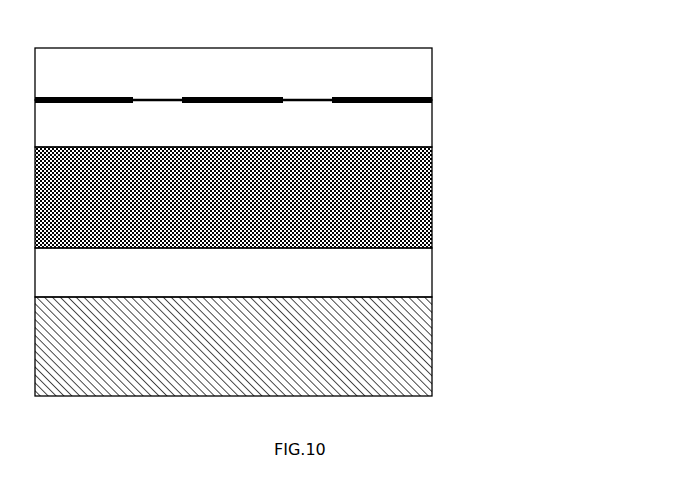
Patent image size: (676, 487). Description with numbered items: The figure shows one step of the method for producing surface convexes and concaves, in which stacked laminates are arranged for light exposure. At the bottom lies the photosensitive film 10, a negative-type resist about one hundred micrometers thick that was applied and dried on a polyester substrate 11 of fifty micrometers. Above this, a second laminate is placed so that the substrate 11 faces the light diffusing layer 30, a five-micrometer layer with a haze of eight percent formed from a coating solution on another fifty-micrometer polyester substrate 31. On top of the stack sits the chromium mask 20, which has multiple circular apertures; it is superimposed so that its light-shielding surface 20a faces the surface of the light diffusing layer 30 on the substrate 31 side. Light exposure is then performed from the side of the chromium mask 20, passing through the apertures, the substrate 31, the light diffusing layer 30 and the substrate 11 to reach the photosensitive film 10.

The photosensitive film 10 is at (432, 360).
The substrate 11 is at (432, 272).
The light diffusing layer 30 is at (432, 213).
The substrate 31 is at (432, 130).
The chromium mask 20 is at (432, 68).
The light-shielding surface 20a is at (432, 100).